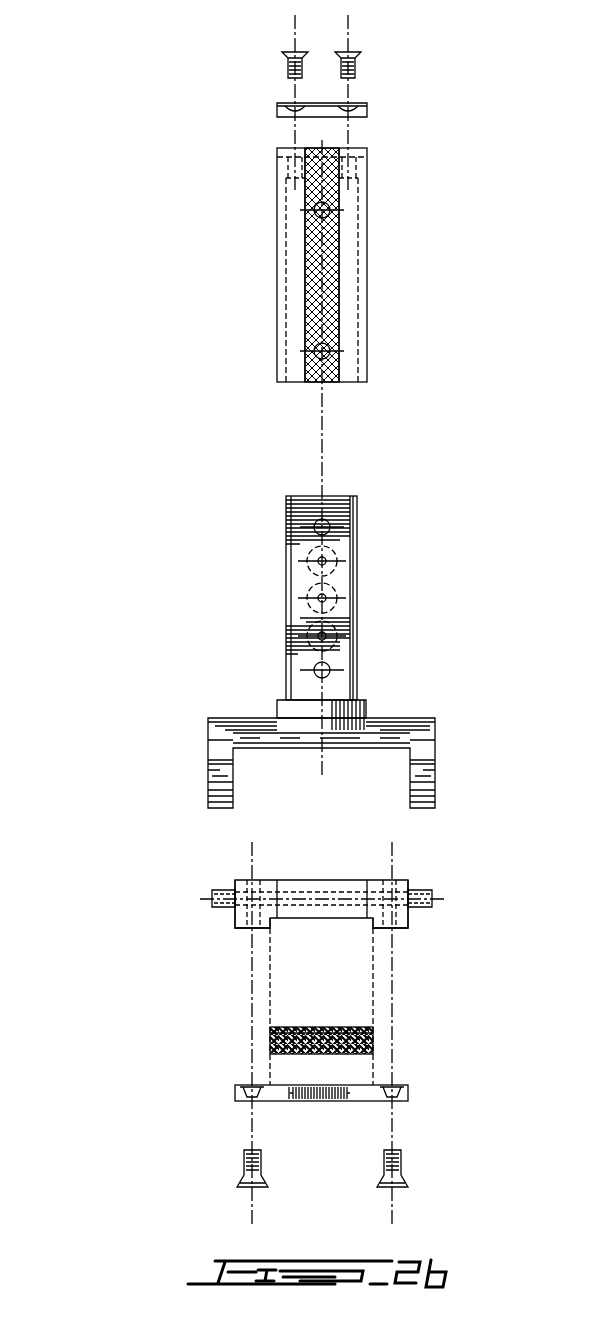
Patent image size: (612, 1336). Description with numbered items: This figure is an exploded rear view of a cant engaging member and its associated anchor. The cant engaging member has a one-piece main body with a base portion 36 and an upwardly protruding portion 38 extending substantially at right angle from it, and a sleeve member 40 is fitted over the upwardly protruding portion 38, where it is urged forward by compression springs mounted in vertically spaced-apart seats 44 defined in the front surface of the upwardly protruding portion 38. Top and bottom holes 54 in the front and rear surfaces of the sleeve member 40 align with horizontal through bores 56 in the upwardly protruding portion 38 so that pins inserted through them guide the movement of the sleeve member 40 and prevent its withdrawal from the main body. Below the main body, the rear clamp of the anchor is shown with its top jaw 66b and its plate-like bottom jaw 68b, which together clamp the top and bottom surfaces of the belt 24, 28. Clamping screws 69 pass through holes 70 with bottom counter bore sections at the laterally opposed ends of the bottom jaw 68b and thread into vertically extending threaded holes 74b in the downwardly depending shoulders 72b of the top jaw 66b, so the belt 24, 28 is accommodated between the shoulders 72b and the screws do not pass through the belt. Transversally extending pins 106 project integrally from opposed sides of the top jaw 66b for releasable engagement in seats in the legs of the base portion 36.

The belt 24 is at (406, 1033).
The belt 28 is at (373, 1040).
The base portion 36 is at (427, 738).
The upwardly protruding portion 38 is at (357, 597).
The sleeve member 40 is at (367, 292).
The seats 44 is at (337, 565).
The top and bottom holes 54 is at (327, 215).
The horizontal through bores 56 is at (330, 530).
The top jaw of rear clamp 66b is at (325, 878).
The bottom jaw of rear clamp 68b is at (410, 1095).
The clamping screws 69 is at (240, 1183).
The holes with bottom counter bore sections 70 is at (245, 1103).
The downwardly depending shoulders 72b is at (235, 925).
The threaded holes 74b is at (245, 882).
The transversally extending pins 106 is at (212, 899).